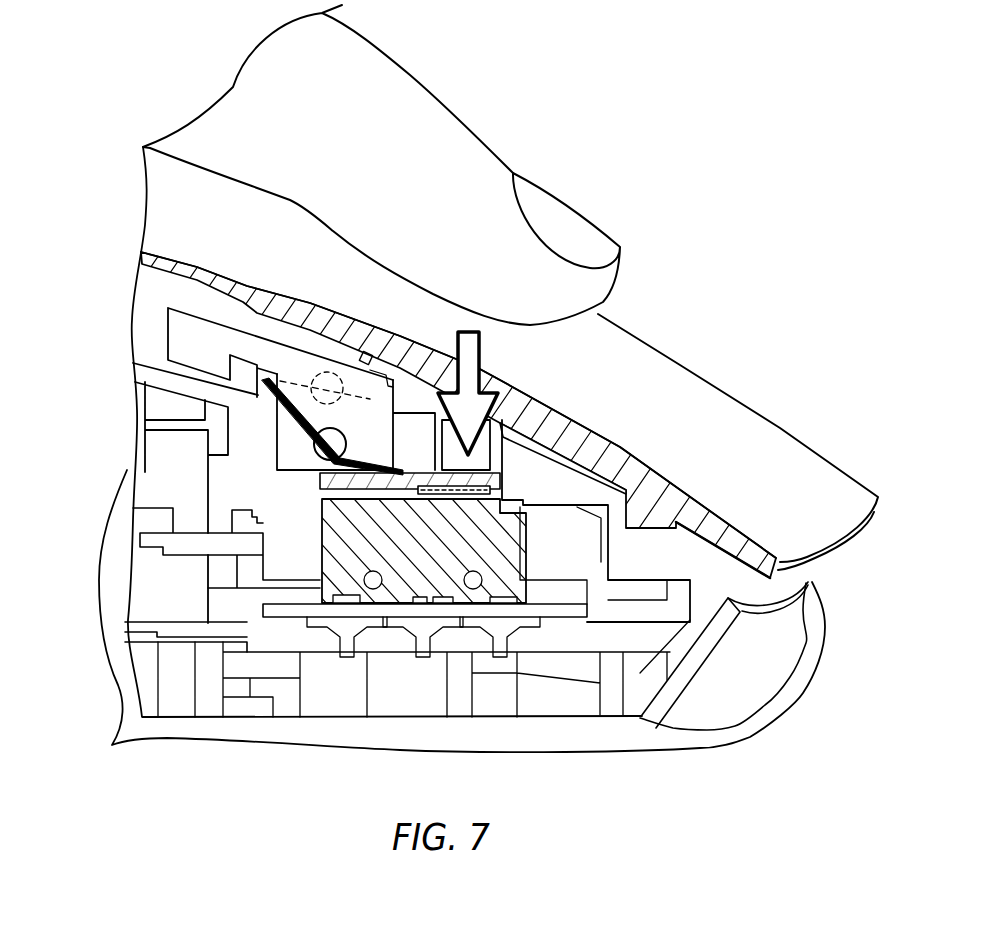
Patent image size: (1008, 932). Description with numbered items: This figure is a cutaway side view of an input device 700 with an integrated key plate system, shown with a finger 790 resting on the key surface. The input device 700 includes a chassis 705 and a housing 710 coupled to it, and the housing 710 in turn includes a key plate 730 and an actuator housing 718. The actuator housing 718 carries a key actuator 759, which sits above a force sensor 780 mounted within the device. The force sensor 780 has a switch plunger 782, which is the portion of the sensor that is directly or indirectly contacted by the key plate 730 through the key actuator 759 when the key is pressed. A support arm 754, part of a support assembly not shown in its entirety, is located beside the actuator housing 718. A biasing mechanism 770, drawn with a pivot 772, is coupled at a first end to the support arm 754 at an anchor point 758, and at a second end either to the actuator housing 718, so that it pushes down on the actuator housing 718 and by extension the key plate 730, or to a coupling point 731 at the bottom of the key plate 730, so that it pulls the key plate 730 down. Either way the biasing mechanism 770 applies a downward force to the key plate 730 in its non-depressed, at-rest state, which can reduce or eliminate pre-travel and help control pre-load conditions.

The input device 700 is at (683, 192).
The chassis 705 is at (445, 459).
The housing 710 is at (167, 220).
The actuator housing 718 is at (433, 395).
The key plate 730 is at (650, 390).
The coupling point 731 is at (363, 352).
The support arm 754 is at (150, 292).
The anchor point 758 is at (262, 400).
The key actuator 759 is at (500, 447).
The biasing mechanism 770 is at (300, 452).
The pivot 772 is at (336, 395).
The force sensor 780 is at (410, 570).
The switch plunger 782 is at (450, 495).
The finger 790 is at (448, 150).